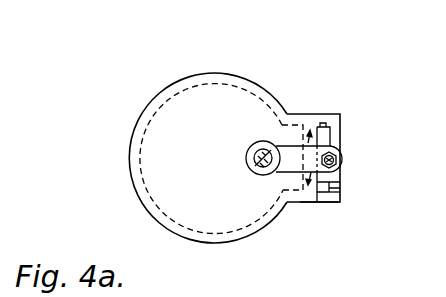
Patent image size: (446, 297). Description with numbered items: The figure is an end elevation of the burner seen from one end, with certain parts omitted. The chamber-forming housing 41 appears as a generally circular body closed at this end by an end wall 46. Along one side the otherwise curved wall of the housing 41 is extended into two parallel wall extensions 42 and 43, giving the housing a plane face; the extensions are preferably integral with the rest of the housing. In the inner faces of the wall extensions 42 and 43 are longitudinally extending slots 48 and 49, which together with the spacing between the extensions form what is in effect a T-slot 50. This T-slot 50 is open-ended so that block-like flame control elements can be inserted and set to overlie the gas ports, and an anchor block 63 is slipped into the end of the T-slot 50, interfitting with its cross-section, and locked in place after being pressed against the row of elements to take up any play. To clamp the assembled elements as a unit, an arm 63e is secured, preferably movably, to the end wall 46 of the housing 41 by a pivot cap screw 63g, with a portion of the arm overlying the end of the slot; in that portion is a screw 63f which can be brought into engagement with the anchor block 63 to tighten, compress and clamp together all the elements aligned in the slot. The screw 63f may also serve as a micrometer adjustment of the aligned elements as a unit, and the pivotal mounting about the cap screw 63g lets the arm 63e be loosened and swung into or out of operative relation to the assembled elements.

The housing 41 is at (143, 102).
The end wall 46 is at (212, 90).
The wall extension 42 is at (323, 125).
The longitudinally extending slot 48 is at (330, 127).
The anchor block 63 is at (337, 142).
The screw 63f is at (341, 158).
The strap eye end 63g is at (263, 166).
The T-slot 50 is at (318, 182).
The longitudinally extending slot 49 is at (340, 191).
The wall extension 43 is at (320, 200).
The arm 63e is at (293, 165).